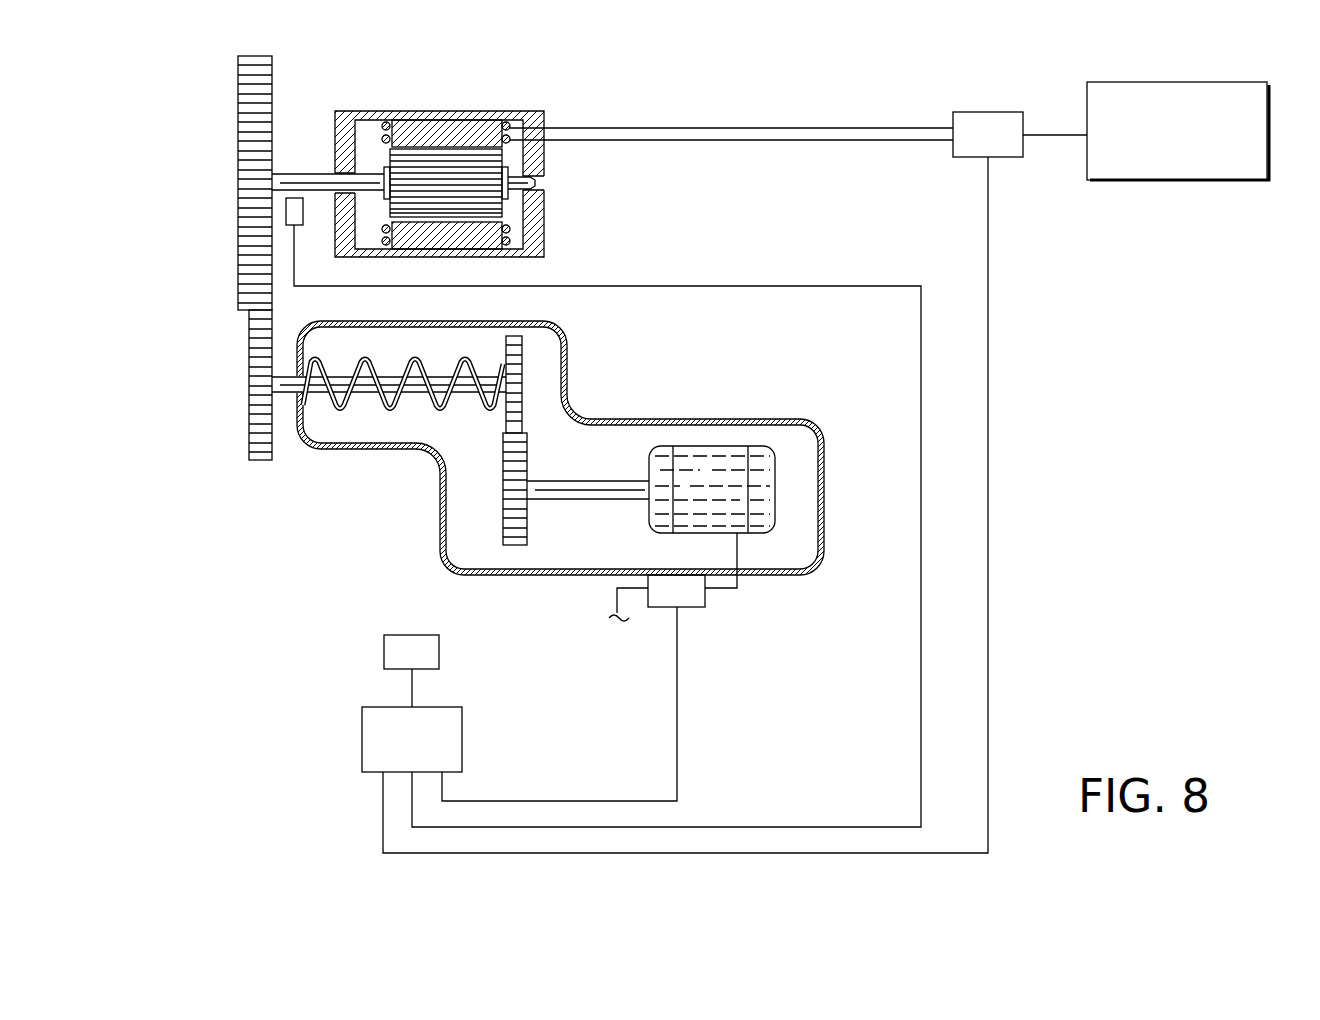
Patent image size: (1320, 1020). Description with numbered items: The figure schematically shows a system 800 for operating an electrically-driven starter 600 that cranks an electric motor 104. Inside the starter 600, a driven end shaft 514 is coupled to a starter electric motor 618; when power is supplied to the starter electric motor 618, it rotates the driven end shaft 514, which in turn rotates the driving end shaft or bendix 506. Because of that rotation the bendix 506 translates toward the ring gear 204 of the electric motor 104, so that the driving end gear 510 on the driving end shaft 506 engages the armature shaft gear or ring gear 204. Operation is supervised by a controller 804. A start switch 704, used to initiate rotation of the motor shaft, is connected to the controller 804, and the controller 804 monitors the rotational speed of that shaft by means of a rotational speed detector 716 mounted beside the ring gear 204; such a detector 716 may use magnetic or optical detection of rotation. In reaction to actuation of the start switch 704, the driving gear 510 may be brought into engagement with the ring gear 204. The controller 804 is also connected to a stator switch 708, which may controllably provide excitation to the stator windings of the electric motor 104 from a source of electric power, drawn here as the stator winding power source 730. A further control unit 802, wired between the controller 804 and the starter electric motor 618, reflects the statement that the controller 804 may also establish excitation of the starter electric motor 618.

The electric motor 104 is at (503, 126).
The ring gear 204 is at (248, 173).
The rotational speed detector 716 is at (290, 211).
The driving end shaft 506 is at (285, 380).
The driving end gear 510 is at (258, 434).
The electrically-driven starter 600 is at (410, 493).
The driven end shaft 514 is at (598, 485).
The starter electric motor 618 is at (733, 455).
The controller 802 is at (697, 607).
The start switch 704 is at (384, 650).
The controller 804 is at (462, 745).
The stator switch 708 is at (970, 112).
The stator winding power source 730 is at (1167, 183).
The system 800 is at (245, 742).